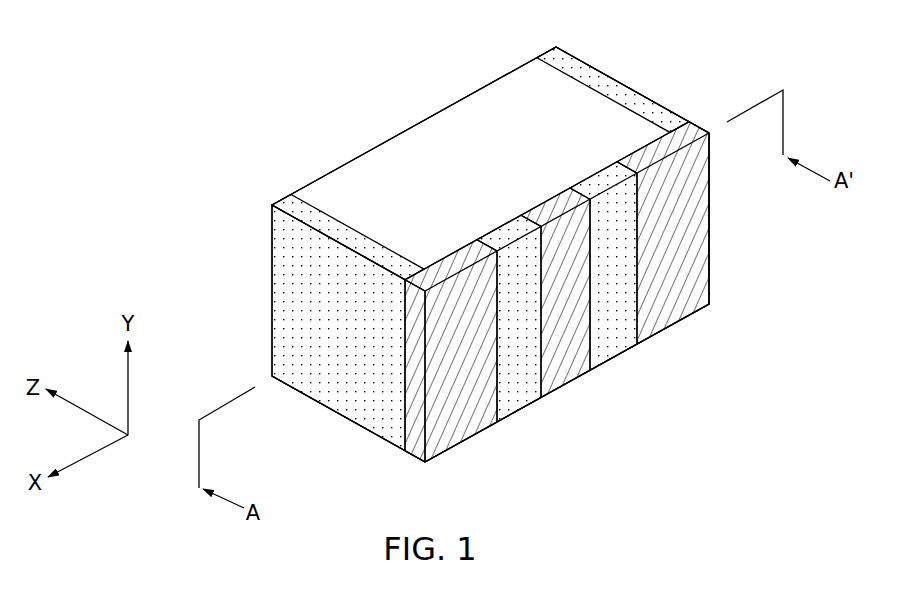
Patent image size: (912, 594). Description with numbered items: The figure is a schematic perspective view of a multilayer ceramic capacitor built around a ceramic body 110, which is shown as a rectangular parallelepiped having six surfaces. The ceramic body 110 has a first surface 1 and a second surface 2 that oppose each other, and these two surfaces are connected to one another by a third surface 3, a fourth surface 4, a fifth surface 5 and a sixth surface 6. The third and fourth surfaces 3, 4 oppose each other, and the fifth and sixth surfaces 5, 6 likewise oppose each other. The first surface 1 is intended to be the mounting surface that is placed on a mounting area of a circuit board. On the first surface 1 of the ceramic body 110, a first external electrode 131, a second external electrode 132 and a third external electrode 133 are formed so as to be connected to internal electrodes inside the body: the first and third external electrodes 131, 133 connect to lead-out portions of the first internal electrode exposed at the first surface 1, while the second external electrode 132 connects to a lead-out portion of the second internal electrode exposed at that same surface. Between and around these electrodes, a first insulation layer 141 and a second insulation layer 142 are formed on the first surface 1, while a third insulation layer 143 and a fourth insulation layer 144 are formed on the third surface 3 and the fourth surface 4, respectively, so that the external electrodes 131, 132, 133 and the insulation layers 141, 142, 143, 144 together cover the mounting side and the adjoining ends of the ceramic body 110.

The first surface 1 is at (686, 330).
The second surface 2 is at (342, 148).
The third surface 3 is at (292, 298).
The fourth surface 4 is at (570, 102).
The fifth surface 5 is at (447, 130).
The sixth surface 6 is at (339, 396).
The ceramic body 110 is at (505, 98).
The first external electrode 131 is at (460, 437).
The second external electrode 132 is at (567, 380).
The third external electrode 133 is at (697, 243).
The first insulation layer 141 is at (515, 403).
The second insulation layer 142 is at (610, 352).
The third insulation layer 143 is at (283, 243).
The fourth insulation layer 144 is at (660, 110).